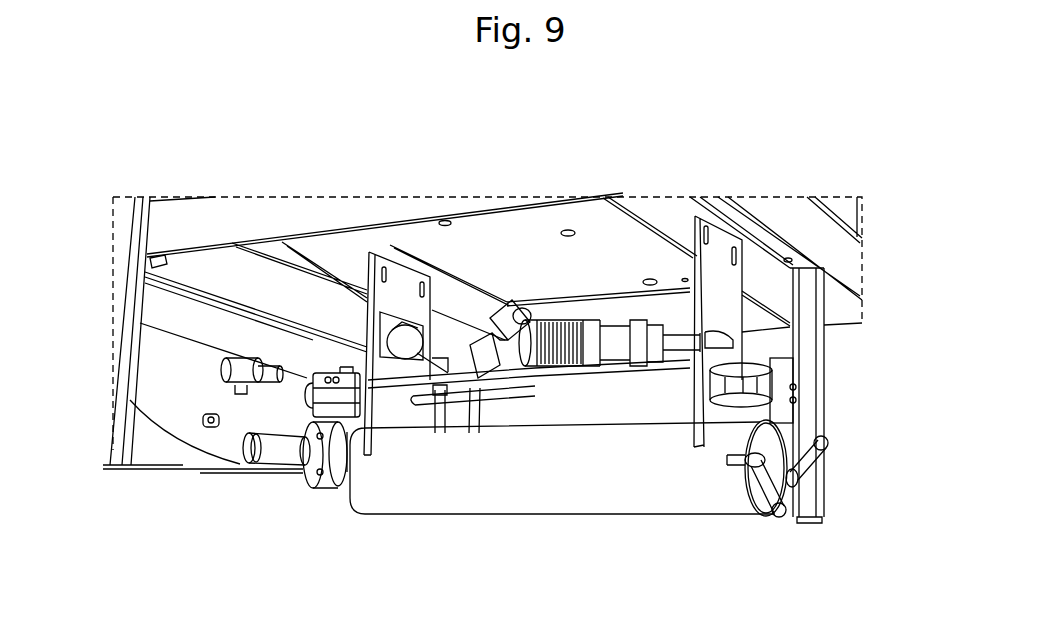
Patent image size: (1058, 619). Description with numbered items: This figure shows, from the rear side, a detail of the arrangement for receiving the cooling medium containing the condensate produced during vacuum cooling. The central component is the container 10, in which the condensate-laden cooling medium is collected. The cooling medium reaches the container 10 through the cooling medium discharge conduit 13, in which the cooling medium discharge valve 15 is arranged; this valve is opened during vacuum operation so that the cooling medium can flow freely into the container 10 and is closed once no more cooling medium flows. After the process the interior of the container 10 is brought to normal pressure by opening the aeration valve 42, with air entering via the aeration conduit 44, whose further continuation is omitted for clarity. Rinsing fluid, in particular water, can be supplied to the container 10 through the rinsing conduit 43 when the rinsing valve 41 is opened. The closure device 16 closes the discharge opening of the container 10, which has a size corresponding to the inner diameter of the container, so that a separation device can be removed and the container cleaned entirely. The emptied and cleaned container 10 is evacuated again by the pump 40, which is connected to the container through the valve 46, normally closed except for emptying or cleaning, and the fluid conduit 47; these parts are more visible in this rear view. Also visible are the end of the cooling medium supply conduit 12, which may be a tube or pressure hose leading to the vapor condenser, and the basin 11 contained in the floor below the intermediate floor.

The container 10 is at (540, 488).
The basin 11 is at (173, 390).
The cooling medium supply conduit 12 is at (275, 375).
The cooling medium discharge conduit 13 is at (265, 452).
The cooling medium discharge valve 15 is at (328, 453).
The closure device 16 is at (777, 458).
The pump 40 is at (562, 350).
The rinsing valve 41 is at (510, 305).
The aeration valve 42 is at (404, 345).
The rinsing conduit 43 is at (473, 412).
The aeration conduit 44 is at (438, 405).
The valve 46 is at (768, 391).
The fluid conduit 47 is at (733, 346).